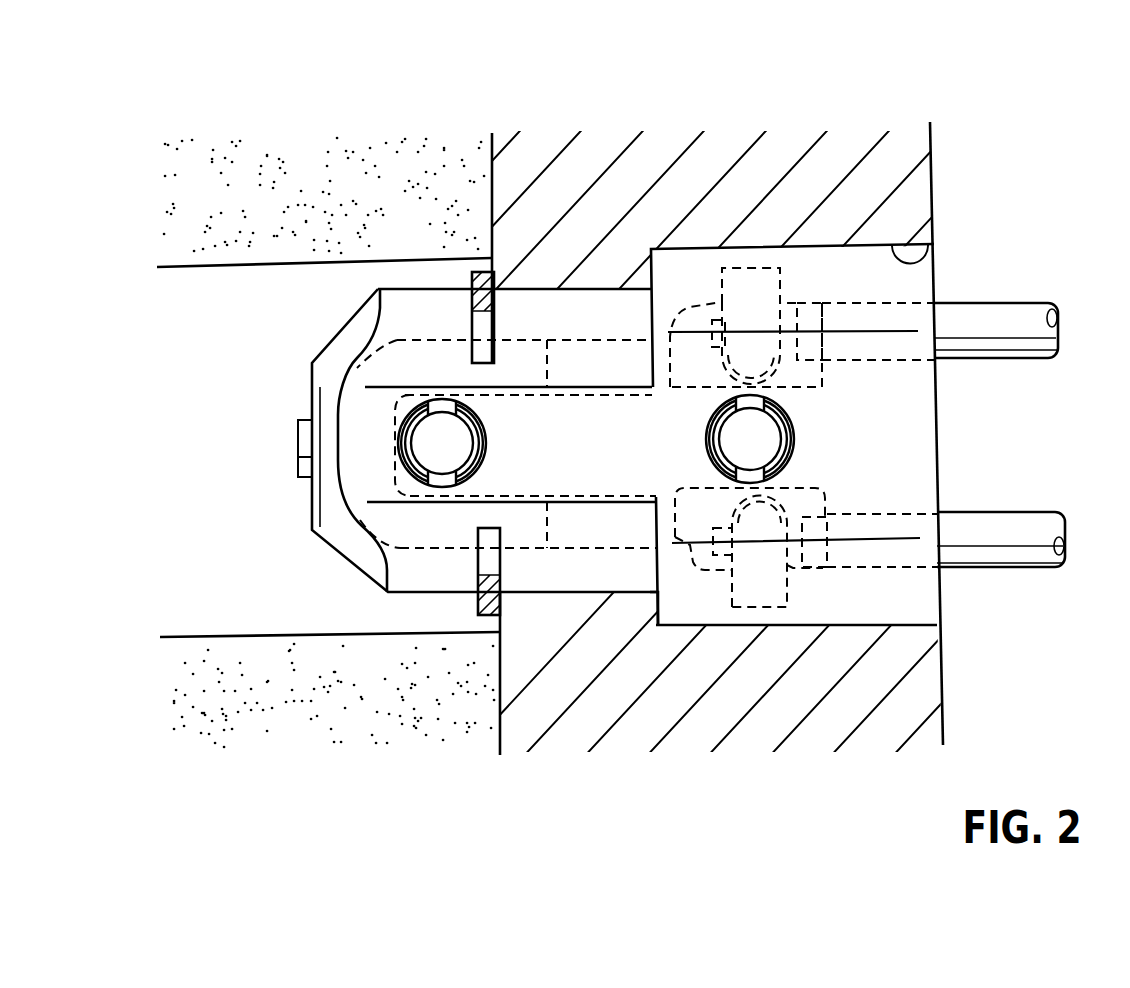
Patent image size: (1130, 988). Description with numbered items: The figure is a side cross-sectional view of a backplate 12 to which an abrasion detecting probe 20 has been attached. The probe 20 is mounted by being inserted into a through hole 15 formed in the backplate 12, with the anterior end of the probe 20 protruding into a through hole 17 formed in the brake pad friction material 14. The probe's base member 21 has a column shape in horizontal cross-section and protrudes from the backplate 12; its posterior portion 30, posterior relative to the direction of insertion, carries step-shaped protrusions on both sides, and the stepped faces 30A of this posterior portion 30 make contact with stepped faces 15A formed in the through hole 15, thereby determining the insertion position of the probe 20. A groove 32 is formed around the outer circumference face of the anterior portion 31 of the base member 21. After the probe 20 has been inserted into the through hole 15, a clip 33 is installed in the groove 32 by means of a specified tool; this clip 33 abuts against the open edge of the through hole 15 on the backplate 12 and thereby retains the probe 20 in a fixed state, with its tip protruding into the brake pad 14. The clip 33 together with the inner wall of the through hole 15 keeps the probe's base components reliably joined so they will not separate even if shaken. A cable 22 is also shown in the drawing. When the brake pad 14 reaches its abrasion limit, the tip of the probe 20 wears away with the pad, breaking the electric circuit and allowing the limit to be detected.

The backplate 12 is at (663, 153).
The brake pad friction material 14 is at (308, 180).
The through hole 15 is at (933, 247).
The stepped faces 15A is at (660, 603).
The through hole 17 is at (197, 272).
The abrasion detecting probe 20 is at (950, 280).
The base member 21 is at (955, 609).
The seal 22 is at (612, 547).
The posterior portion 30 is at (908, 428).
The stepped faces 30A is at (655, 617).
The anterior portion 31 is at (423, 535).
The groove 32 is at (484, 615).
The clip 33 is at (488, 617).